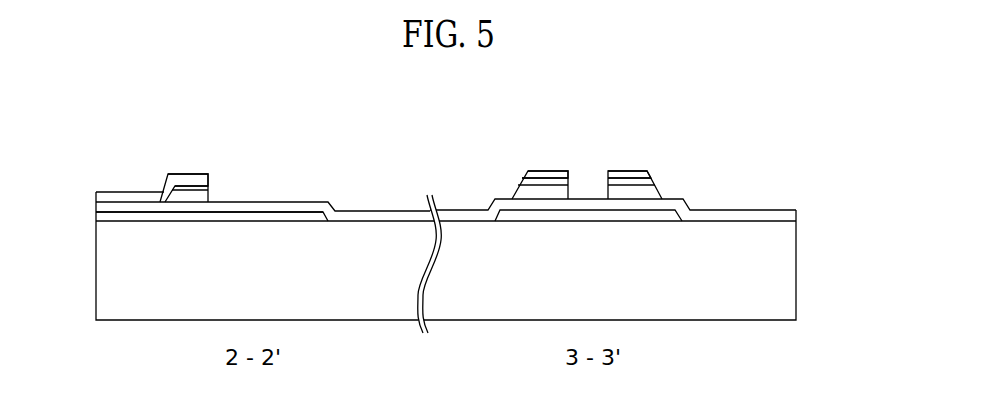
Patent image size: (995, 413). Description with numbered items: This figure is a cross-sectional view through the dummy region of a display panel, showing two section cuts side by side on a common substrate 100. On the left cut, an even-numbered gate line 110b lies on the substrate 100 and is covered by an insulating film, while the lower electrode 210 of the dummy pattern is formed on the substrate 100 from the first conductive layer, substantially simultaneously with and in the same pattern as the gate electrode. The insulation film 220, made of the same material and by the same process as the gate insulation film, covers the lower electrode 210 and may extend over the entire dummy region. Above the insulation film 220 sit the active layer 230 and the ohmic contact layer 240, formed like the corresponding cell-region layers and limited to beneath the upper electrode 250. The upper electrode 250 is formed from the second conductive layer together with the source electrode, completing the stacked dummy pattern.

The substrate 100 is at (108, 291).
The even-numbered gate line 110b is at (102, 223).
The lower electrode 210 is at (180, 218).
The insulation film 220 is at (107, 209).
The active layer 230 is at (205, 197).
The ohmic contact layer 240 is at (208, 187).
The upper electrode 250 is at (198, 182).